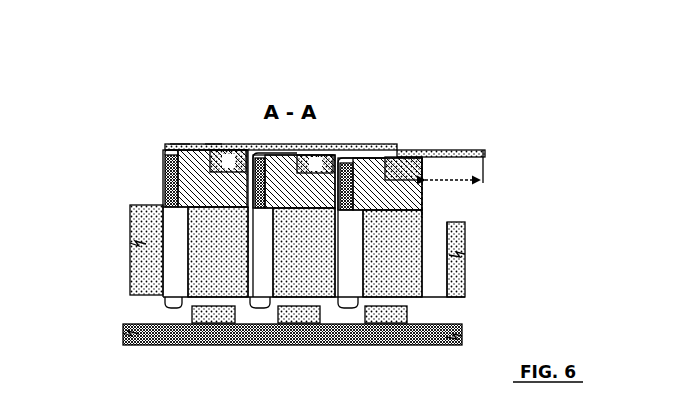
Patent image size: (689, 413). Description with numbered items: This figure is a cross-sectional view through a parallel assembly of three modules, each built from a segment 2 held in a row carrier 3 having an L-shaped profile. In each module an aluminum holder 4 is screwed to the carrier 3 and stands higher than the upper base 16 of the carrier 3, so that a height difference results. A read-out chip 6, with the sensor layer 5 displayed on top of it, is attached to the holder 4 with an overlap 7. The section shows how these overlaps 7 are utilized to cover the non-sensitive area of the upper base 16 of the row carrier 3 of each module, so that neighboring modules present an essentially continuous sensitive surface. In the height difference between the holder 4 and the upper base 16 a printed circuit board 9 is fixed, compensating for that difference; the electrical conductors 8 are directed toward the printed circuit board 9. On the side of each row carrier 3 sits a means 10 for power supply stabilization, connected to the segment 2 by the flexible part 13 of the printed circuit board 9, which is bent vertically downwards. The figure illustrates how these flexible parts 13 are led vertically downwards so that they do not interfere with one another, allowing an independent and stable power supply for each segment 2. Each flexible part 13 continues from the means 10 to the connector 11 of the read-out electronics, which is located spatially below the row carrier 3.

The segment 2 is at (188, 90).
The row carrier 3 is at (423, 200).
The holder 4 is at (414, 156).
The sensor layer 5 is at (313, 144).
The read-out chip 6 is at (237, 144).
The overlap 7 is at (452, 184).
The electrical conductors 8 is at (213, 144).
The printed circuit board 9 is at (183, 144).
The means for power supply stabilization 10 is at (175, 183).
The connector of the read-out electronics 11 is at (192, 312).
The flexible part of the printed circuit board 13 is at (163, 151).
The upper base of the carrier 16 is at (192, 144).